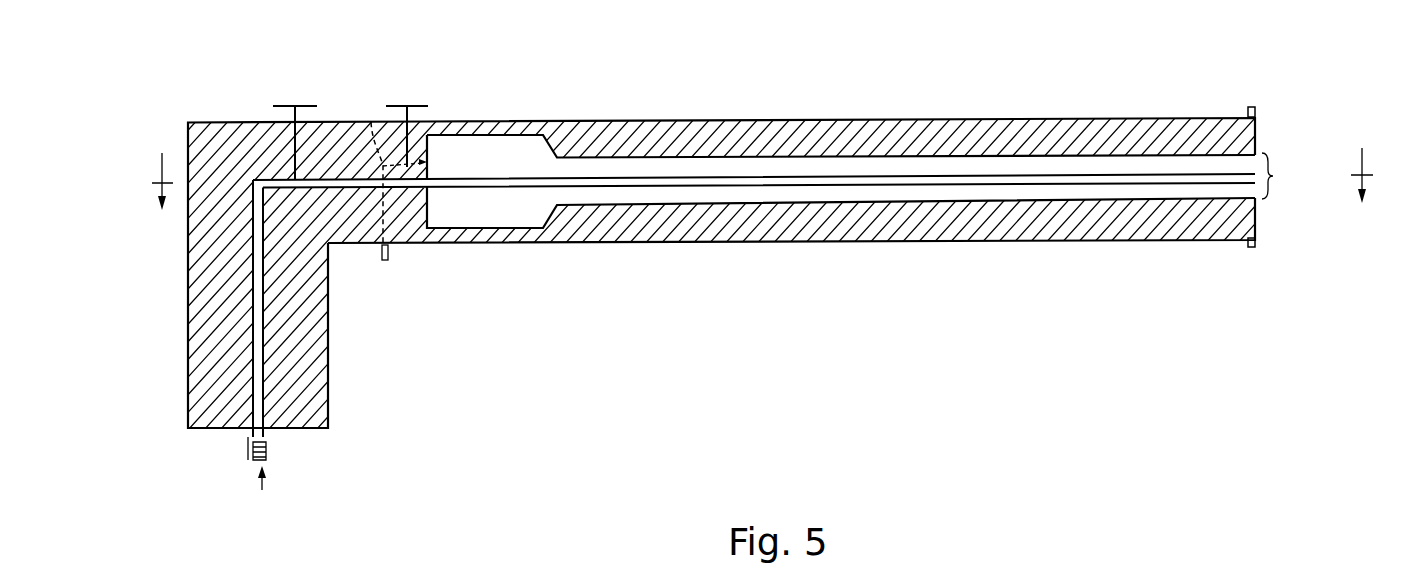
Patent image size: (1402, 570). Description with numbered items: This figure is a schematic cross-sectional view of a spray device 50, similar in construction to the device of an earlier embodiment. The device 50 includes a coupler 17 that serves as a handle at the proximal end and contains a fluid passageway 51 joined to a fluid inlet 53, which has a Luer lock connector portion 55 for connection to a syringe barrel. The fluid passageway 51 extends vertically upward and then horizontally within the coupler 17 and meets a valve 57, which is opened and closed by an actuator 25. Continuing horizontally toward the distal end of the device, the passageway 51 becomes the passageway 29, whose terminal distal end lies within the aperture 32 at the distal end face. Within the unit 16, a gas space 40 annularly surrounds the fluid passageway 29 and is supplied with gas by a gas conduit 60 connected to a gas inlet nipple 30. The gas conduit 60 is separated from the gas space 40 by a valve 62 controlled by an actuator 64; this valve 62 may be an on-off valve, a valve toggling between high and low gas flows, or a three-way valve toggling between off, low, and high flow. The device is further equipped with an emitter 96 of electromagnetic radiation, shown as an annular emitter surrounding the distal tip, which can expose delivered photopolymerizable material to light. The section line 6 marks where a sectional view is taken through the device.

The elongated probe body 16 is at (491, 127).
The base block 17 is at (198, 288).
The inlet tube 25 is at (293, 104).
The conduit tube 29 is at (1193, 175).
The connector 30 is at (386, 260).
The distal end 32 is at (1273, 176).
The cavity 40 is at (1103, 163).
The fluid delivery assembly 50 is at (382, 82).
The supply channel 51 is at (263, 372).
The fluid flow 53 is at (266, 489).
The fitting 55 is at (247, 447).
The junction 57 is at (292, 178).
The passage 60 is at (371, 121).
The aperture 62 is at (428, 160).
The outlet tube 64 is at (409, 104).
The end stop 96 is at (1252, 106).
The section line 6- 6 is at (762, 179).